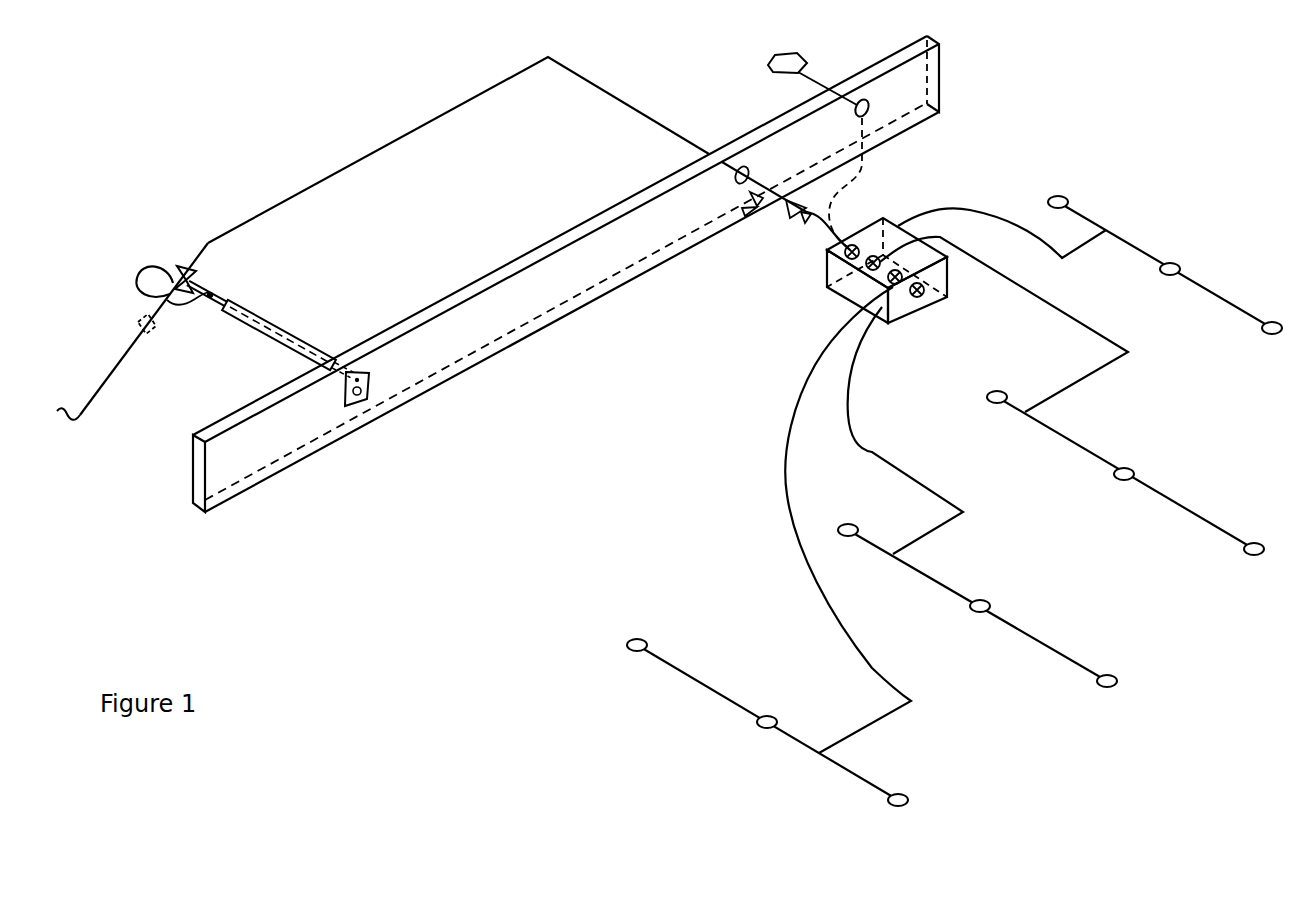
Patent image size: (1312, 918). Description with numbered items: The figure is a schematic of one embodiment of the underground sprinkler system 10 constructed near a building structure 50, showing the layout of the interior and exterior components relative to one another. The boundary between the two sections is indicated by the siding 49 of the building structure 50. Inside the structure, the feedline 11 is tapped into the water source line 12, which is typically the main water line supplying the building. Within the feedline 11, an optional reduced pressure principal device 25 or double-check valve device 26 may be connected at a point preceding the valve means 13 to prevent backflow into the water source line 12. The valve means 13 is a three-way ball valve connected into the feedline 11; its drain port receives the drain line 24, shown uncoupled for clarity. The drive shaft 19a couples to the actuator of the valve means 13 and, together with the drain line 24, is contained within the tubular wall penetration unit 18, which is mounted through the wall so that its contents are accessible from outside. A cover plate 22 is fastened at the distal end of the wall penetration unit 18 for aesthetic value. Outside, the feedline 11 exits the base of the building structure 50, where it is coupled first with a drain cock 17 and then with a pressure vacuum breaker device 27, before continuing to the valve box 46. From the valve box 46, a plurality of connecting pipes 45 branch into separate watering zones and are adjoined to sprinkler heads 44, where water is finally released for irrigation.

The underground sprinkler system 10 is at (1193, 92).
The feedline 11 is at (352, 163).
The water source line 12 is at (108, 379).
The valve means 13 is at (183, 268).
The drain cock 17 is at (756, 216).
The wall penetration unit 18 is at (300, 338).
The drive shaft 19a is at (203, 280).
The cover plate 22 is at (372, 394).
The drain line 24 is at (135, 271).
The reduced pressure principal device 25 is at (152, 330).
The double-check valve device 26 is at (193, 342).
The pressure vacuum breaker device 27 is at (801, 223).
The sprinkler heads 44 is at (1058, 195).
The connecting pipes 45 is at (957, 212).
The valve box 46 is at (905, 312).
The siding 49 is at (914, 82).
The building structure 50 is at (229, 163).